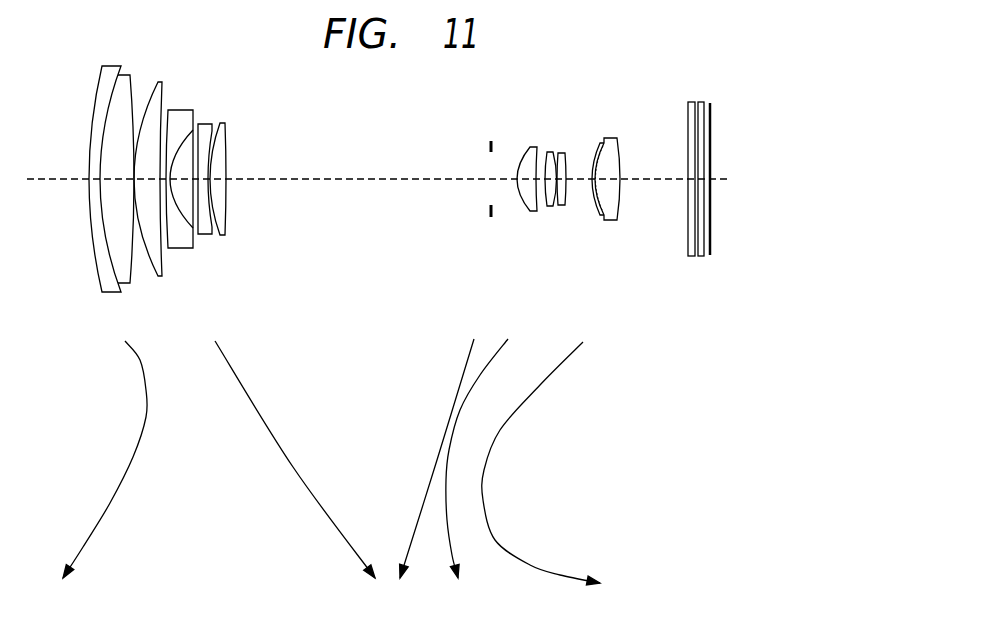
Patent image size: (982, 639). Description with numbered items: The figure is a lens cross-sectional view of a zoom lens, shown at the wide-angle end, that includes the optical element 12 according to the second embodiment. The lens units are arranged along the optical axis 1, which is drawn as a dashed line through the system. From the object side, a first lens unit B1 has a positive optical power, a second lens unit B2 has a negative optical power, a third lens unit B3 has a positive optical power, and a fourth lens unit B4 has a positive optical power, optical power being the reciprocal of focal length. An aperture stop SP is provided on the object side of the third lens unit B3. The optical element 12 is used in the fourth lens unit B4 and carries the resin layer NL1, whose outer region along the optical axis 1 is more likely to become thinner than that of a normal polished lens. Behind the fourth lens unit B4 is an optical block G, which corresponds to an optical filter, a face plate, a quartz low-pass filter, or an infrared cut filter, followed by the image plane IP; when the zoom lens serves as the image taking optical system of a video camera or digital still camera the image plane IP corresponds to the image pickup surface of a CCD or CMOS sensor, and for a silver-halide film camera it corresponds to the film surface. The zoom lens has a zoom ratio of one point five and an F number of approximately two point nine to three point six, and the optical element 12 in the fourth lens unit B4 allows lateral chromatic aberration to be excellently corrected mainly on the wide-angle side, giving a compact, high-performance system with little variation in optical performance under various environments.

The optical axis 1 is at (60, 178).
The first lens unit B1 is at (164, 295).
The second lens unit B2 is at (232, 295).
The third lens unit B3 is at (571, 223).
The fourth lens unit B4 is at (583, 186).
The aperture stop SP is at (489, 148).
The resin layer NL1 is at (600, 150).
The optical element 12 is at (584, 158).
The optical block G is at (709, 97).
The image plane IP is at (712, 121).